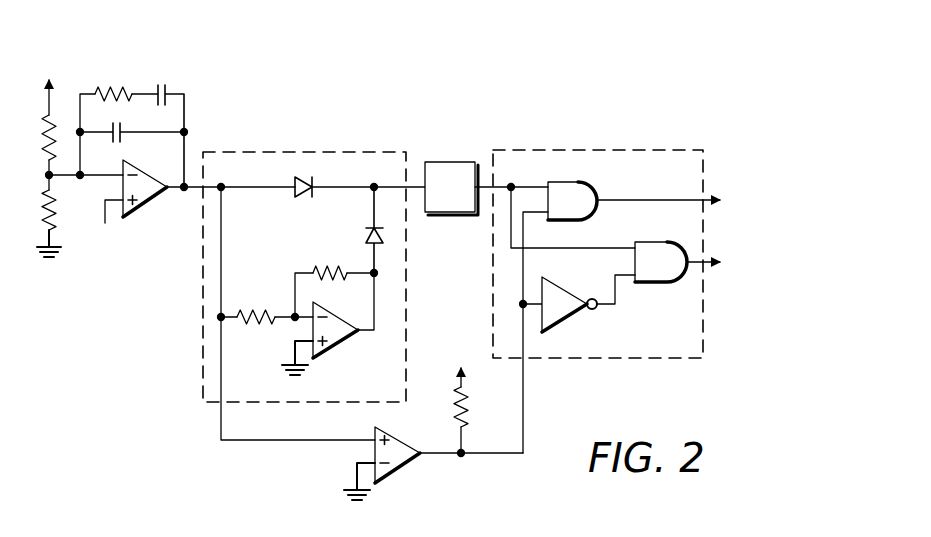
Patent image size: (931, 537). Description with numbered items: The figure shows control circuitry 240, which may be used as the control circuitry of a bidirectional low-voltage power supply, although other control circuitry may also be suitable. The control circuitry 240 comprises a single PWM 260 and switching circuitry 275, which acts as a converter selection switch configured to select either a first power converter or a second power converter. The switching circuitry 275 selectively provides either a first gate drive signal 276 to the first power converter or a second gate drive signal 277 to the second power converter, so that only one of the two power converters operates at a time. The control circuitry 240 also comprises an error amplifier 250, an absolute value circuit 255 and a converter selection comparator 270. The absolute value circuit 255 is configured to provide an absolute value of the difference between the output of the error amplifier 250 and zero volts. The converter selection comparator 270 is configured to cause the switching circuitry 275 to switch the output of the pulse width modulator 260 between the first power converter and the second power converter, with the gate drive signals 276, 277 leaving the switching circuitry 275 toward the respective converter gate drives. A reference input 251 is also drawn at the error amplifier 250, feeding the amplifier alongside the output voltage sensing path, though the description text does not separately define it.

The control circuitry 240 is at (400, 100).
The error amplifier 250 is at (117, 295).
The reference voltage input 251 is at (105, 258).
The absolute value circuit 255 is at (270, 152).
The PWM 260 is at (452, 162).
The converter selection comparator 270 is at (407, 472).
The switching circuitry 275 is at (557, 150).
The first gate drive signal 276 is at (641, 200).
The second gate drive signal 277 is at (697, 262).